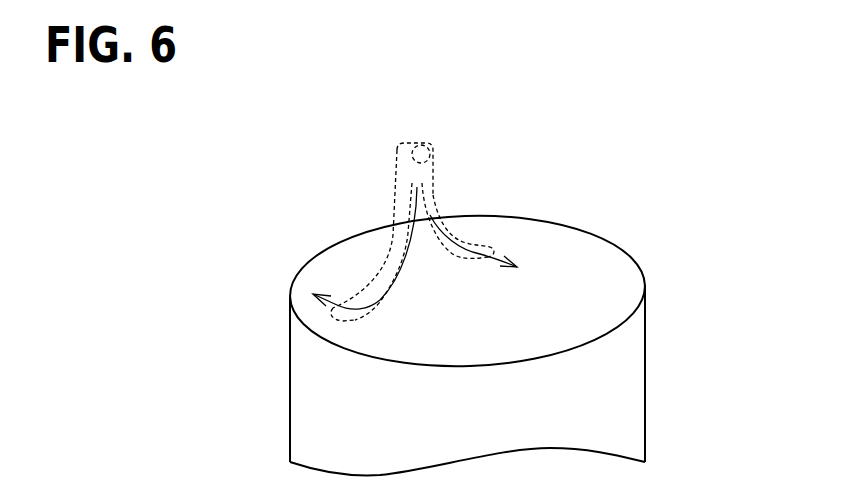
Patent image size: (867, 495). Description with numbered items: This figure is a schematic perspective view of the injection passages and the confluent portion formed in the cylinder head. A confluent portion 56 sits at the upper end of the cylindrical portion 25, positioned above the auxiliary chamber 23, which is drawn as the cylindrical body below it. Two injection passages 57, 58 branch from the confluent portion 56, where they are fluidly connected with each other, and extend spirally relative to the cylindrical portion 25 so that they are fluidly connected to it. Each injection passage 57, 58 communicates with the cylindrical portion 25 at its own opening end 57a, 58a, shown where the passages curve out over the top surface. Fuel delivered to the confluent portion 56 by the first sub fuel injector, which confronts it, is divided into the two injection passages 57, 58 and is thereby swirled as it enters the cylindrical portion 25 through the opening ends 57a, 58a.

The auxiliary chamber 23 is at (325, 437).
The cylindrical portion 25 is at (645, 438).
The confluent portion 56 is at (430, 143).
The injection passage 57 is at (432, 198).
The opening end 57a is at (470, 243).
The injection passage 58 is at (397, 212).
The opening end 58a is at (348, 320).